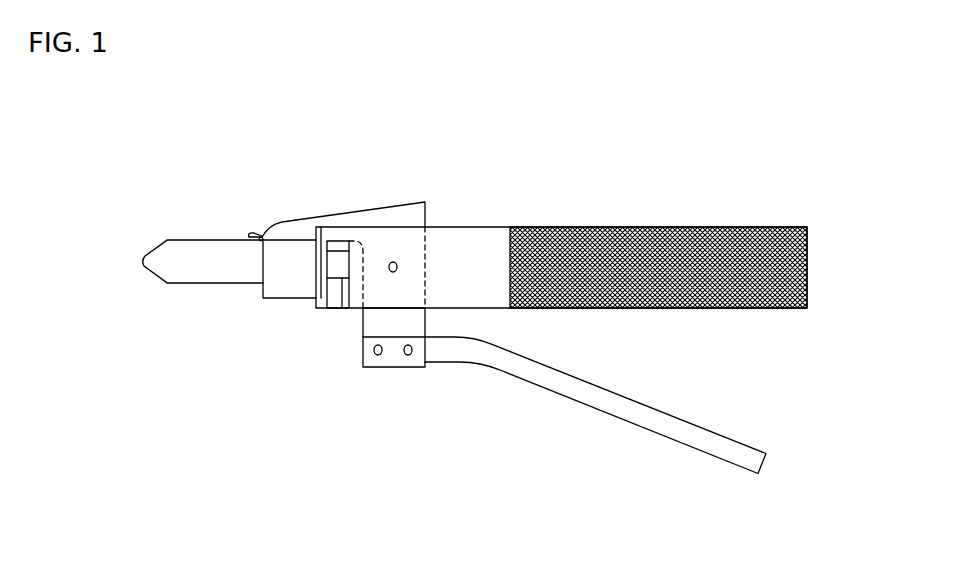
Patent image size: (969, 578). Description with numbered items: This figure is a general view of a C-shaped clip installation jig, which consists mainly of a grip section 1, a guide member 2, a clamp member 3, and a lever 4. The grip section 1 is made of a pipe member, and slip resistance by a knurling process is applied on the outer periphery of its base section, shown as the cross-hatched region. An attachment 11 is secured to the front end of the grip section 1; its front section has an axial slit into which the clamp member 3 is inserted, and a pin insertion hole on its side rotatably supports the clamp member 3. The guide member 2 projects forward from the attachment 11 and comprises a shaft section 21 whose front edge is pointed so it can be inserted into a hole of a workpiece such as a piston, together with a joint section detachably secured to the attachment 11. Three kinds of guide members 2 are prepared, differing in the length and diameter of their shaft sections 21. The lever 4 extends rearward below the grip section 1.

The grip section 1 is at (581, 222).
The guide member 2 is at (165, 234).
The shaft section 21 is at (197, 274).
The clamp member 3 is at (376, 197).
The lever 4 is at (565, 385).
The attachment 11 is at (341, 271).